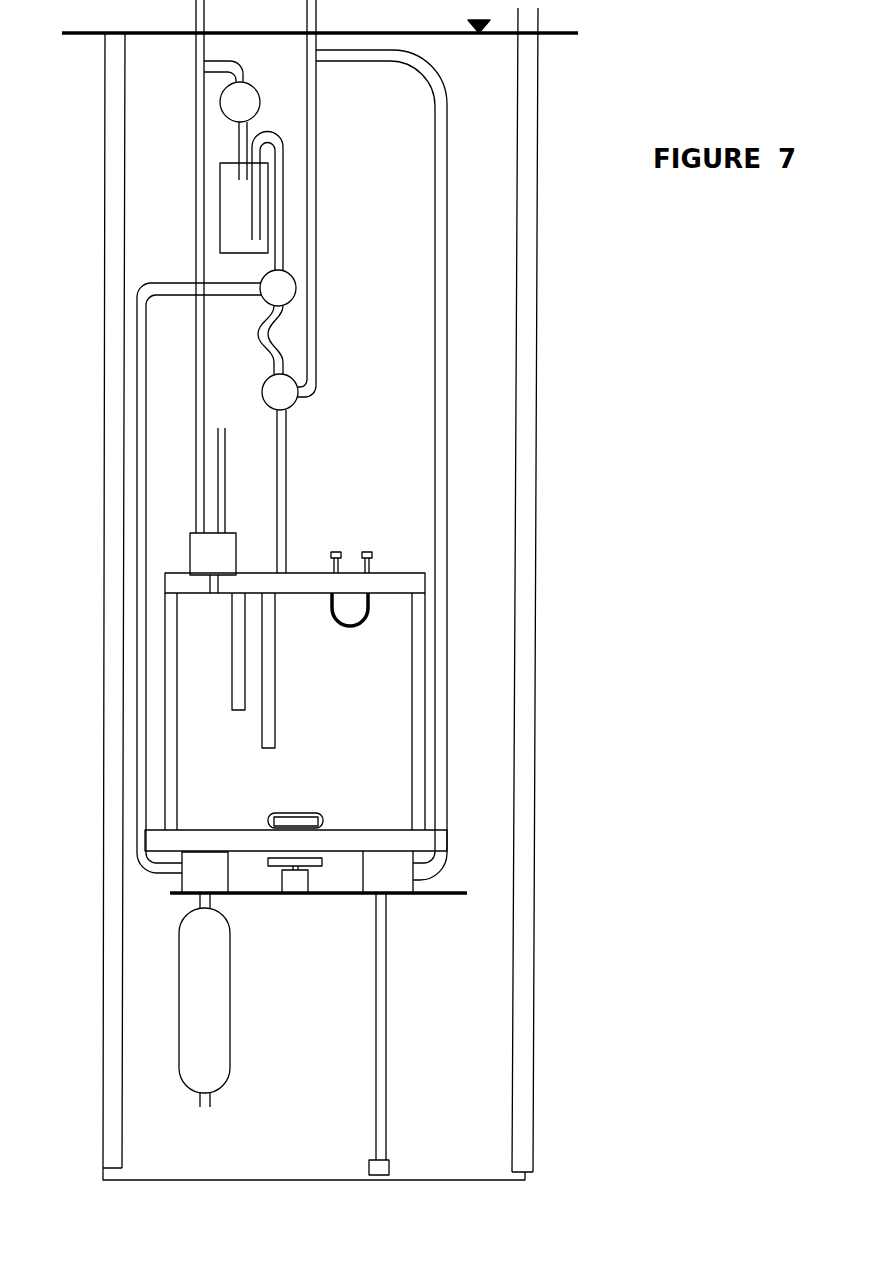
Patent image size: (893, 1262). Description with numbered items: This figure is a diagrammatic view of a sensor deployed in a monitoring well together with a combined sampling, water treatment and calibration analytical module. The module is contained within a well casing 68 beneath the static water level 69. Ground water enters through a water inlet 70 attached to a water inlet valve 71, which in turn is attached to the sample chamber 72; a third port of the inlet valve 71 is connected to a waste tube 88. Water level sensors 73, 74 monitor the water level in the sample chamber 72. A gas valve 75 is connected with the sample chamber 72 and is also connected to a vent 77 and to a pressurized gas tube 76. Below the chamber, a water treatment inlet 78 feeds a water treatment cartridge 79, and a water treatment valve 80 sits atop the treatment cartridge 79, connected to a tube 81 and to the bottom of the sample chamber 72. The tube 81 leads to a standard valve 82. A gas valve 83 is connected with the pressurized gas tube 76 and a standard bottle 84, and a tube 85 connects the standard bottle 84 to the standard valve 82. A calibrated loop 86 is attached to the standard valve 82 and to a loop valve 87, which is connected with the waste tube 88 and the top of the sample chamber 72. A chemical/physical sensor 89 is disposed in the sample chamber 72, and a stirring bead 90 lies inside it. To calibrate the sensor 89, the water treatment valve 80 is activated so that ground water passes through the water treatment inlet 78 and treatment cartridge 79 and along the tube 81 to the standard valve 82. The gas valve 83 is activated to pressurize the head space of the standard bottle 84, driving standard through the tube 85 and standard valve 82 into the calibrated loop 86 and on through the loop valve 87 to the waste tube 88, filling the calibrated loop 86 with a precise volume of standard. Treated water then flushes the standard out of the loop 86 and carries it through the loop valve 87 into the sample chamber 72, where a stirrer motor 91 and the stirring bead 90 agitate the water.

The well casing 68 is at (103, 1018).
The static water level 69 is at (565, 36).
The water inlet 70 is at (387, 1088).
The water inlet valve 71 is at (394, 887).
The sample chamber 72 is at (357, 711).
The water level sensor 73 is at (230, 684).
The water level sensor 74 is at (275, 722).
The gas valve 75 is at (226, 570).
The pressurized gas tube 76 is at (196, 232).
The vent 77 is at (222, 463).
The water treatment inlet 78 is at (212, 1102).
The water treatment cartridge 79 is at (219, 1021).
The water treatment valve 80 is at (218, 888).
The tube 81 is at (148, 528).
The standard valve 82 is at (290, 299).
The gas valve 83 is at (252, 113).
The standard bottle 84 is at (249, 228).
The standard tube 85 is at (288, 162).
The calibrated loop 86 is at (289, 360).
The loop valve 87 is at (292, 403).
The waste tube 88 is at (322, 217).
The chemical/physical sensor 89 is at (327, 558).
The stirring bead 90 is at (325, 816).
The stirrer motor 91 is at (308, 880).